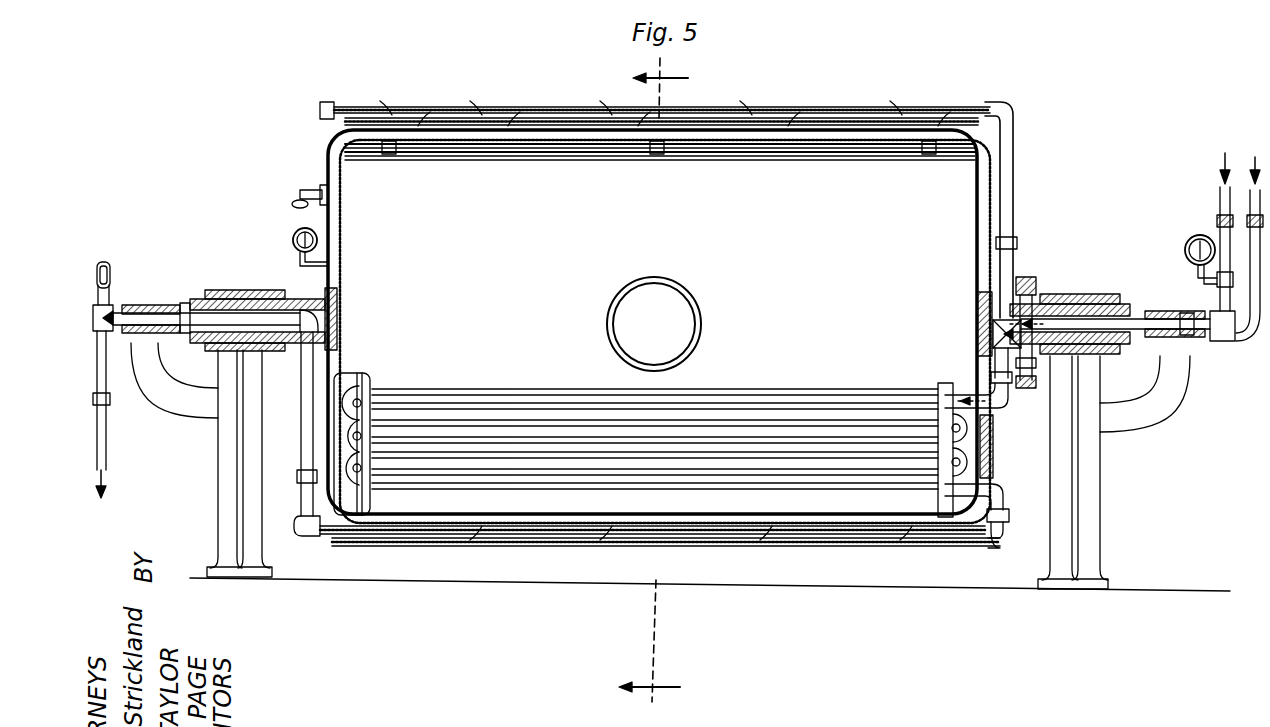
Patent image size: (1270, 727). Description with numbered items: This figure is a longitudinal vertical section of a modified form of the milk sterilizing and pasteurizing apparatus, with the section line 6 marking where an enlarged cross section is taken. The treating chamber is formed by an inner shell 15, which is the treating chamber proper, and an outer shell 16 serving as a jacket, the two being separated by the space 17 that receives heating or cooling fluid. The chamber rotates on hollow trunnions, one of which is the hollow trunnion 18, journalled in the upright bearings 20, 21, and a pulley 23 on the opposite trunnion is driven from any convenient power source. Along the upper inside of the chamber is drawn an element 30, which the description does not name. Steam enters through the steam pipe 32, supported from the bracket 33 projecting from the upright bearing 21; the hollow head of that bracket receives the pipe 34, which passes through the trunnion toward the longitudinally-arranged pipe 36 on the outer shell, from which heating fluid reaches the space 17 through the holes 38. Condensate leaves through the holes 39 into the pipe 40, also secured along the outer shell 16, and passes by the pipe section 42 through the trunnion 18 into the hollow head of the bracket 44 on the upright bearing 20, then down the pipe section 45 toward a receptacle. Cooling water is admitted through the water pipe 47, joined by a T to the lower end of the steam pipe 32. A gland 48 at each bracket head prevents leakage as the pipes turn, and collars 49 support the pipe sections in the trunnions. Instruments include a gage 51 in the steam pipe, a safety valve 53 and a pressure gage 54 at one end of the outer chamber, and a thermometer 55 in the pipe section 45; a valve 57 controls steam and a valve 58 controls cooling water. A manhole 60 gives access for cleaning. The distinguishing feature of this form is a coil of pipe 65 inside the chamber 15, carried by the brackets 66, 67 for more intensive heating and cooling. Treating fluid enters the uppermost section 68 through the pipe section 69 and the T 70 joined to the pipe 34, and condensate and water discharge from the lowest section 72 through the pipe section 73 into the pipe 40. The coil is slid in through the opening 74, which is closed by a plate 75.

The section line 6— 6 is at (653, 384).
The inner shell 15 is at (975, 212).
The outer shell 16 is at (990, 183).
The space 17 is at (1000, 220).
The hollow trunnion 18 is at (304, 302).
The upright bearing 20 is at (220, 453).
The upright bearing 21 is at (1092, 481).
The pulley 23 is at (1032, 278).
The heating element rows 30 is at (475, 160).
The steam pipe 32 is at (1219, 231).
The bracket 33 is at (1163, 415).
The pipe 34 is at (1078, 320).
The longitudinally-arranged pipe 36 is at (655, 99).
The holes 38 is at (660, 122).
The holes 39 is at (428, 532).
The pipe 40 is at (862, 547).
The pipe section 42 is at (305, 437).
The bracket 44 is at (165, 400).
The pipe section 45 is at (110, 314).
The water pipe 47 is at (1230, 341).
The gland 48 is at (187, 305).
The collar 49 is at (210, 338).
The gage 51 is at (1185, 251).
The safety valve 53 is at (306, 188).
The pressure gage 54 is at (302, 236).
The thermometer 55 is at (112, 280).
The valve 57 is at (1219, 212).
The valve 58 is at (1250, 187).
The manhole 60 is at (654, 324).
The coil of pipe 65 is at (780, 430).
The bracket 66 is at (373, 385).
The bracket 67 is at (942, 386).
The uppermost section 68 is at (655, 428).
The pipe section 69 is at (993, 360).
The T 70 is at (991, 332).
The lowest section 72 is at (880, 481).
The pipe section 73 is at (1003, 508).
The opening 74 is at (970, 433).
The plate 75 is at (975, 452).